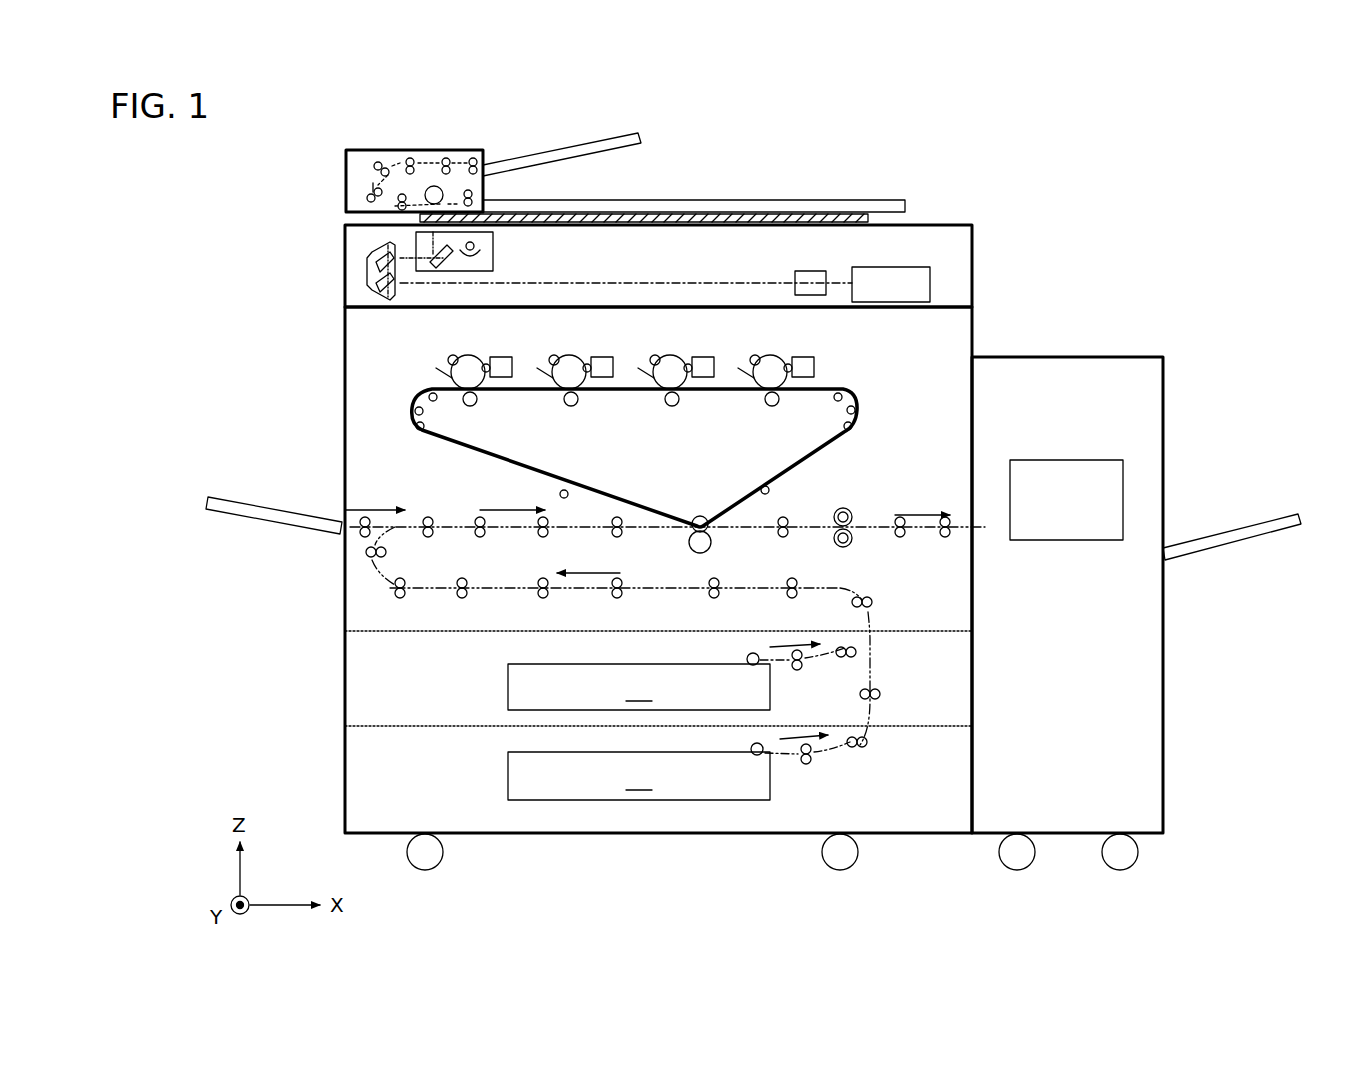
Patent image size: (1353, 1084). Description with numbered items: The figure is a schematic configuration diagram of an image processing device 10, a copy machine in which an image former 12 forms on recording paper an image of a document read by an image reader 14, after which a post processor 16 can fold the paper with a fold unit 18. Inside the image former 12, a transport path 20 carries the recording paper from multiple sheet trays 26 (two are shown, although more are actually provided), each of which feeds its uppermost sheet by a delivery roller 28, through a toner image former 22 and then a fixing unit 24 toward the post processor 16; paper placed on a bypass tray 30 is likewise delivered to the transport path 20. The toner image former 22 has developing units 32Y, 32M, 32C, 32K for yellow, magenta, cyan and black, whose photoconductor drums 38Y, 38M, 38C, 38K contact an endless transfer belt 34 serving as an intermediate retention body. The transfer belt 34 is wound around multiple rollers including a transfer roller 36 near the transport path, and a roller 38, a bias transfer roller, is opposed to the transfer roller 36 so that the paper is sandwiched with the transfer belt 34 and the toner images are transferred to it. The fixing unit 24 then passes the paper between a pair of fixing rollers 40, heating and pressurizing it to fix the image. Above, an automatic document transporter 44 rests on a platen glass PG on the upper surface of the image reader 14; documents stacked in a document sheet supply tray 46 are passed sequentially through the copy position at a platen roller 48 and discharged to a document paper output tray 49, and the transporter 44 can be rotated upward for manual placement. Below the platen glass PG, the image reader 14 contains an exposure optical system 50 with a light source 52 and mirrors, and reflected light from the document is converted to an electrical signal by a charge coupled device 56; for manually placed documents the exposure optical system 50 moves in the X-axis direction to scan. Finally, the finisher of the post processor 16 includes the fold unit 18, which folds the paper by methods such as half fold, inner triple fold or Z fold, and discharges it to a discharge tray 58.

The image processing device 10 is at (1072, 222).
The image former 12 is at (963, 342).
The image reader 14 is at (961, 266).
The post processor 16 is at (1061, 376).
The fold unit 18 is at (1040, 462).
The transport path 20 is at (375, 562).
The toner image former 22 is at (376, 380).
The fixing unit 24 is at (872, 558).
The sheet tray 26 is at (639, 732).
The delivery roller 28 is at (746, 660).
The bypass tray 30 is at (230, 502).
The developing unit 32K is at (508, 341).
The developing unit 32C is at (614, 341).
The developing unit 32M is at (716, 341).
The developing unit 32Y is at (820, 341).
The transfer belt 34 is at (848, 446).
The transfer roller 36 is at (700, 516).
The roller 38 is at (710, 548).
The photoconductor drum 38K is at (468, 356).
The photoconductor drum 38C is at (578, 356).
The photoconductor drum 38M is at (680, 356).
The photoconductor drum 38Y is at (786, 356).
The fixing rollers 40 is at (848, 510).
The automatic document transporter 44 is at (336, 185).
The document sheet supply tray 46 is at (584, 142).
The platen roller 48 is at (434, 186).
The document paper output tray 49 is at (545, 200).
The platen glass PG is at (848, 214).
The exposure optical system 50 is at (372, 262).
The light source 52 is at (485, 258).
The solid-state imaging charge coupled device (CCD) 56 is at (896, 264).
The discharge tray 58 is at (1258, 512).